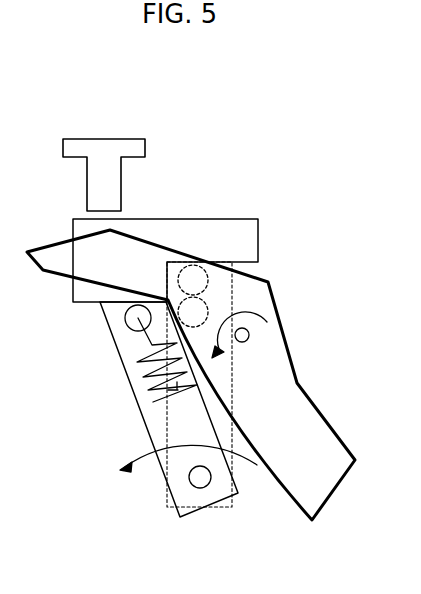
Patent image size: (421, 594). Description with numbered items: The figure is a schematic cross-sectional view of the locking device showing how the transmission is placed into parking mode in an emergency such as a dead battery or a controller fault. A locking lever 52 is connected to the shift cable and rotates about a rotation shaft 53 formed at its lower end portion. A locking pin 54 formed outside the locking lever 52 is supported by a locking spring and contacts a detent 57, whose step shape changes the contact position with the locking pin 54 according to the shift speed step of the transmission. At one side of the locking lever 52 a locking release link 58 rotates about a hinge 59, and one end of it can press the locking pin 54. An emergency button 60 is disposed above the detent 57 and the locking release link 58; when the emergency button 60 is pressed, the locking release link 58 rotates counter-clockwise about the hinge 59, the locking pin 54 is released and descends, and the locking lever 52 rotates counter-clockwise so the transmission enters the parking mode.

The emergency button 60 is at (102, 139).
The detent 57 is at (203, 219).
The locking release link 58 is at (268, 283).
The hinge 59 is at (249, 334).
The locking pin 54 is at (129, 323).
The locking lever 52 is at (136, 398).
The rotation shaft 53 is at (200, 488).